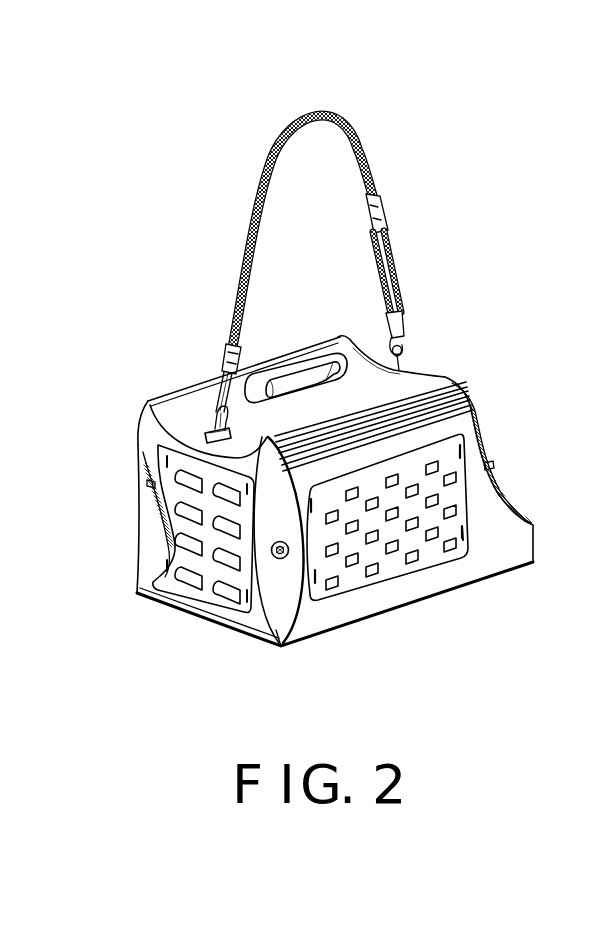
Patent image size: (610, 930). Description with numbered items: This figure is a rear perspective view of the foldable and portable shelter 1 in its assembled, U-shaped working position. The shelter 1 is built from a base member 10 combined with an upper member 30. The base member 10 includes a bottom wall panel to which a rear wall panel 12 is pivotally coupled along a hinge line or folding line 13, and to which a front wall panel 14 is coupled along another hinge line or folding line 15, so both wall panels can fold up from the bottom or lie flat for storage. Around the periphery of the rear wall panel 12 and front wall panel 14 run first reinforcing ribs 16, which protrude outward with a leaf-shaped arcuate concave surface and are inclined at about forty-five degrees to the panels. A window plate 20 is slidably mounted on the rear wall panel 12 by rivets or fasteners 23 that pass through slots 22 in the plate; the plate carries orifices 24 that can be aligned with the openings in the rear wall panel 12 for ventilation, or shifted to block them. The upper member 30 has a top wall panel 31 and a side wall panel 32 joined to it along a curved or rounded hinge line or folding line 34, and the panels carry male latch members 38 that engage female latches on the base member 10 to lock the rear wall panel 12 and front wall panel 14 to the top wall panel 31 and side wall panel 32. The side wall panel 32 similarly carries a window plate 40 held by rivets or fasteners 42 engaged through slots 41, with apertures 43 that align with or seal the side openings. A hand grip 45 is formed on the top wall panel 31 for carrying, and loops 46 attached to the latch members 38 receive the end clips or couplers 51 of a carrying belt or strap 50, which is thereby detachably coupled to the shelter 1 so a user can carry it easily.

The foldable and portable shelter 1 is at (512, 300).
The base member 10 is at (217, 627).
The rear wall panel 12 is at (152, 437).
The hinge line or folding line 13 is at (272, 648).
The front wall panel 14 is at (503, 497).
The hinge line or folding line 15 is at (535, 555).
The first reinforcing rib 16 is at (288, 618).
The window plate 20 is at (197, 592).
The slot 22 is at (167, 560).
The rivet or fastener 23 is at (197, 573).
The orifice 24 is at (177, 541).
The upper member 30 is at (197, 389).
The top wall panel 31 is at (328, 351).
The side wall panel 32 is at (508, 556).
The curved or rounded portion or hinge line or folding line 34 is at (162, 397).
The latch member 38 is at (402, 372).
The window plate 40 is at (396, 570).
The slot 41 is at (464, 541).
The rivet or fastener 42 is at (333, 586).
The aperture 43 is at (353, 562).
The hand grip 45 is at (275, 375).
The ring or loop 46 is at (407, 347).
The carrying belt or strap 50 is at (257, 208).
The end clip or lock or fastener or coupler 51 is at (220, 377).